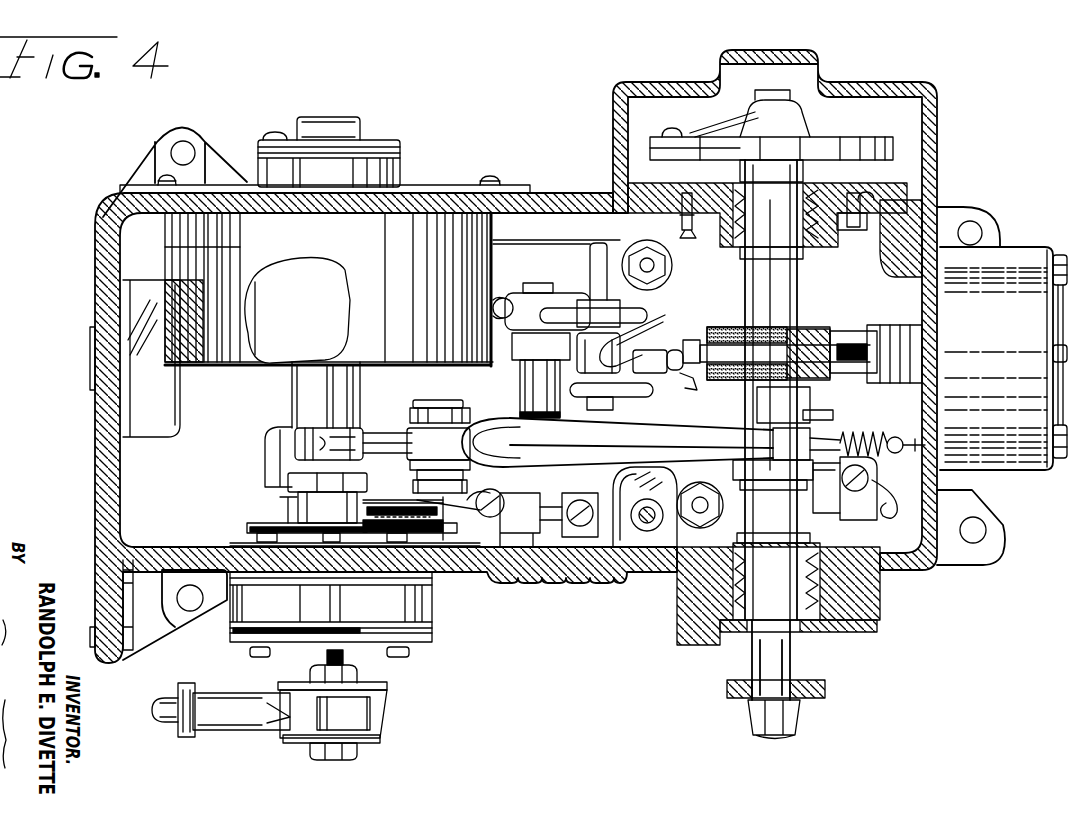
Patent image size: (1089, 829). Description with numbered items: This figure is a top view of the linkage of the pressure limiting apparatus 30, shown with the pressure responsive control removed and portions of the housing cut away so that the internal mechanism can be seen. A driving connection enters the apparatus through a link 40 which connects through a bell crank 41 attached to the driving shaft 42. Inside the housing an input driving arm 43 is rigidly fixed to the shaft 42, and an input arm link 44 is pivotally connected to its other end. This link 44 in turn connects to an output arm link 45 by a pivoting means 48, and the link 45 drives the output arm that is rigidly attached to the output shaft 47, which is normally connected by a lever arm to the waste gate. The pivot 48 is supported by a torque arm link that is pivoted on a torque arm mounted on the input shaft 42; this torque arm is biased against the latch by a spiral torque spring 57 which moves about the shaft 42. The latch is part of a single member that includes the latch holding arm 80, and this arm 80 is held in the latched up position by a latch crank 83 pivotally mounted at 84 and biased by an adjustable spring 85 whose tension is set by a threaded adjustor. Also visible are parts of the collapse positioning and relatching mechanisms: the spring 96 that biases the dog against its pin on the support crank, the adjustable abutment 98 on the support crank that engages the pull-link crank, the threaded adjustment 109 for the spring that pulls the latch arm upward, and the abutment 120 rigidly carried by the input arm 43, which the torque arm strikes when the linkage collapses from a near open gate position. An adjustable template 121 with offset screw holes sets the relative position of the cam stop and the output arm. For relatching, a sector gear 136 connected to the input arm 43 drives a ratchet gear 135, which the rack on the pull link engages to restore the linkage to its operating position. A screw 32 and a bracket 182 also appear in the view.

The pressure limiting apparatus 30 is at (112, 236).
The adjusting screw 32 is at (592, 520).
The link 40 is at (157, 723).
The bell crank 41 is at (385, 684).
The driving shaft 42 is at (305, 386).
The input driving arm 43 is at (288, 474).
The input arm link 44 is at (392, 432).
The output arm link 45 is at (622, 432).
The output shaft 47 is at (800, 300).
The pivoting means 48 is at (462, 408).
The torque spring 57 is at (200, 364).
The latch holding arm 80 is at (650, 372).
The latch crank 83 is at (693, 377).
The pivot of latch crank 84 is at (640, 325).
The adjustable spring 85 is at (733, 327).
The spring 96 is at (853, 430).
The adjustable abutment 98 is at (875, 476).
The threaded adjustment 109 is at (498, 502).
The abutment 120 is at (292, 428).
The adjustable template 121 is at (905, 140).
The ratchet gear 135 is at (393, 500).
The sector gear 136 is at (285, 523).
The bracket 182 is at (662, 522).